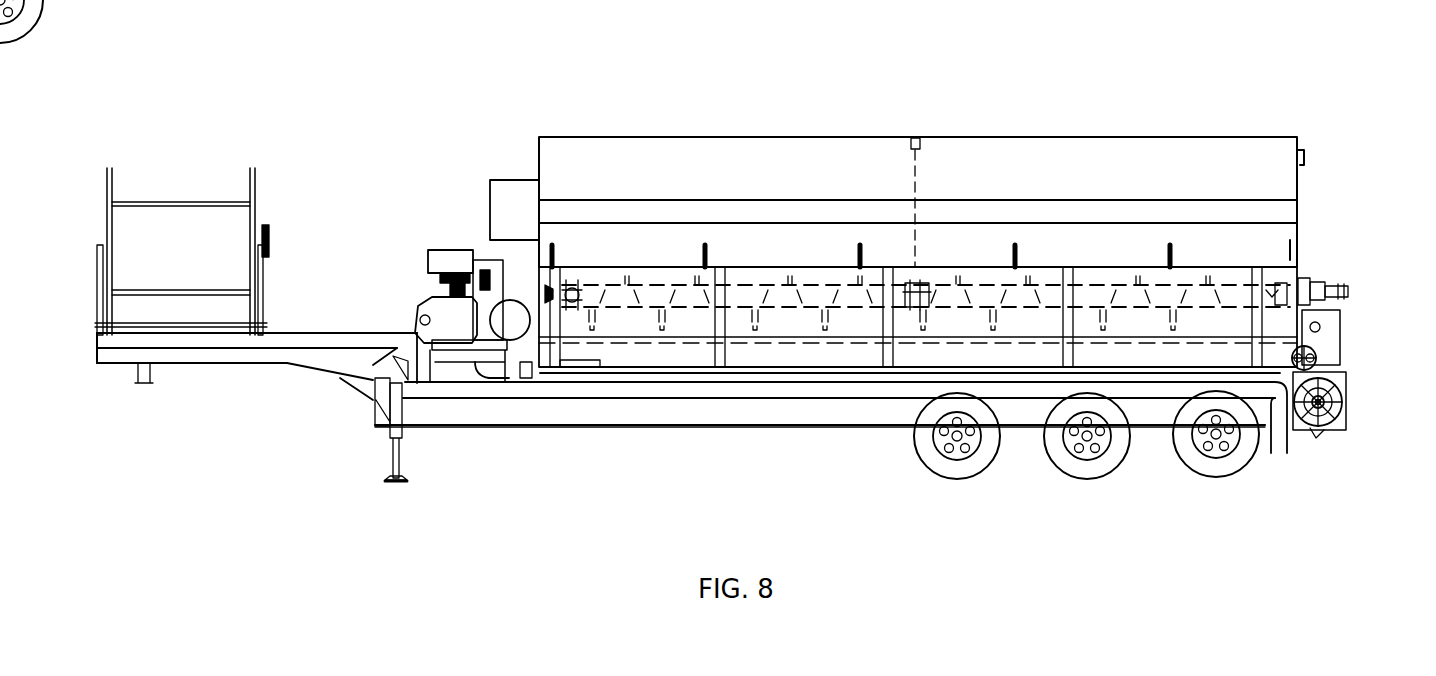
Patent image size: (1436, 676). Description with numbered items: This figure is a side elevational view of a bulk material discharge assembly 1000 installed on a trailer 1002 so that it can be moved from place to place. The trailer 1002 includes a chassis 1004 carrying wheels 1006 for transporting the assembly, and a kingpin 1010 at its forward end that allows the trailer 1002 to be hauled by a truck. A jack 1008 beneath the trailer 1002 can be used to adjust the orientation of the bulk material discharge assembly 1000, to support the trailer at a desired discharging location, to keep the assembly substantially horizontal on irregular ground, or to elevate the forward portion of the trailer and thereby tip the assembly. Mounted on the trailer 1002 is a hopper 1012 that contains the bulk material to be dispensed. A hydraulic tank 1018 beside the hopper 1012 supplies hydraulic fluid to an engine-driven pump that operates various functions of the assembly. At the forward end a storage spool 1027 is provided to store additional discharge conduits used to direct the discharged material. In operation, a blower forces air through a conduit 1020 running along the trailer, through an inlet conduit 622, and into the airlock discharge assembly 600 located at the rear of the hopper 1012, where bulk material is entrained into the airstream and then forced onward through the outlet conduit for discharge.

The bulk material discharge assembly 1000 is at (745, 108).
The hopper 1012 is at (1098, 108).
The hydraulic tank 1018 is at (513, 177).
The storage spool 1027 is at (258, 195).
The kingpin 1010 is at (143, 387).
The jack 1008 is at (404, 460).
The trailer 1002 is at (700, 438).
The chassis 1004 is at (862, 426).
The conduit 1020 is at (614, 372).
The wheels 1006 is at (957, 480).
The airlock discharge assembly 600 is at (1356, 380).
The inlet conduit 622 is at (1324, 428).